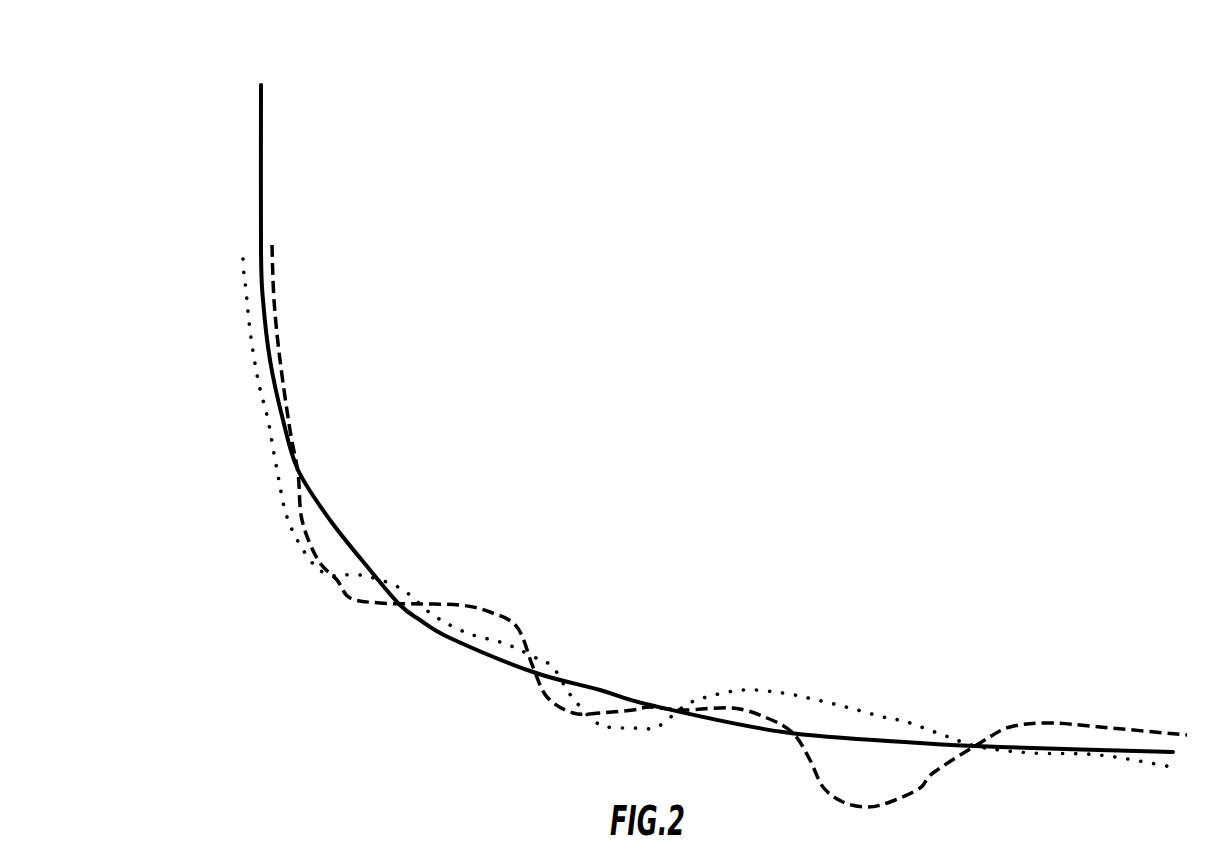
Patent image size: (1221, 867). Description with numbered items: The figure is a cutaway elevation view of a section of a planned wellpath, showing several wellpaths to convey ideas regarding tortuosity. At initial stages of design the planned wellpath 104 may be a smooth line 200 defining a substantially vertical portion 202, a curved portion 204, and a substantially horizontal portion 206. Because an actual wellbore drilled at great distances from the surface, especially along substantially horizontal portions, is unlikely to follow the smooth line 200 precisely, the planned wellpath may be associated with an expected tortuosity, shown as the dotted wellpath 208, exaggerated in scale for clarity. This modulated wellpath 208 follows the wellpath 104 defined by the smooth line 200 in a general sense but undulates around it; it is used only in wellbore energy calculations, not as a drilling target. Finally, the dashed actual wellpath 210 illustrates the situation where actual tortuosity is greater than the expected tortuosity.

The planned wellpath 104 is at (286, 102).
The smooth line 200 is at (263, 262).
The substantially vertical portion 202 is at (268, 155).
The curved portion 204 is at (357, 521).
The substantially horizontal portion 206 is at (988, 648).
The wellpath comprising expected tortuosity 208 is at (241, 259).
The actual wellpath 210 is at (281, 310).